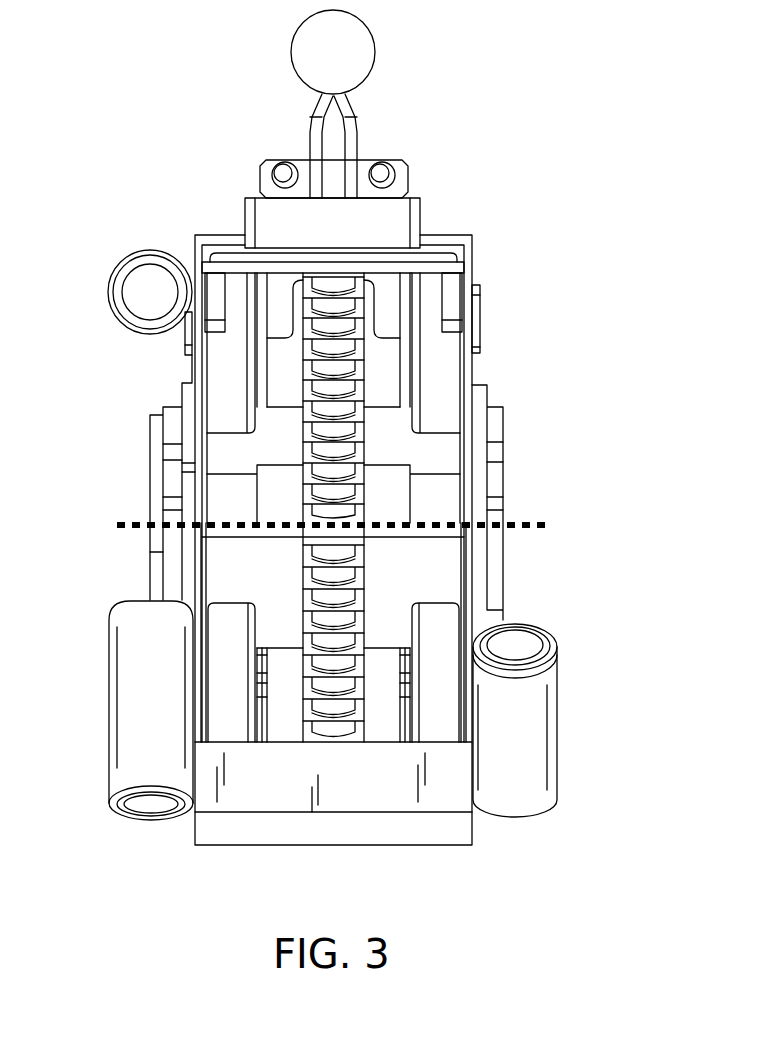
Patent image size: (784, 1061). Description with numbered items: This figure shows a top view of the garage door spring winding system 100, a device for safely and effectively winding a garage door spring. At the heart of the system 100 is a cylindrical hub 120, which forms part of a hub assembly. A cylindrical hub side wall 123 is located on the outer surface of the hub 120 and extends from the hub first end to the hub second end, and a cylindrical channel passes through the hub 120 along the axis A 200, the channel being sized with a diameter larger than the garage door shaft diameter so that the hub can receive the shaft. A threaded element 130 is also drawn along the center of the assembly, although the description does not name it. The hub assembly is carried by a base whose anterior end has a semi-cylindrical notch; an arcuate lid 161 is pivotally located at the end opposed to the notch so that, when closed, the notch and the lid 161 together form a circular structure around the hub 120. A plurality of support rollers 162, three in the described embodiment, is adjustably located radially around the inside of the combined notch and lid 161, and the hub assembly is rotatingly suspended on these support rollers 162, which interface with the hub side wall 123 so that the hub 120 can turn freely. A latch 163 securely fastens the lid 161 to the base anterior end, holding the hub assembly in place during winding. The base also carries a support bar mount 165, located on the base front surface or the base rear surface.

The garage door spring winding system 100 is at (168, 145).
The latch 163 is at (345, 132).
The threaded screw shaft 130 is at (330, 395).
The hub 120 is at (388, 430).
The axis A 200 is at (530, 523).
The hub side wall 123 is at (235, 568).
The support rollers 162 is at (227, 722).
The support bar mount 165 is at (138, 765).
The arcuate lid 161 is at (372, 795).